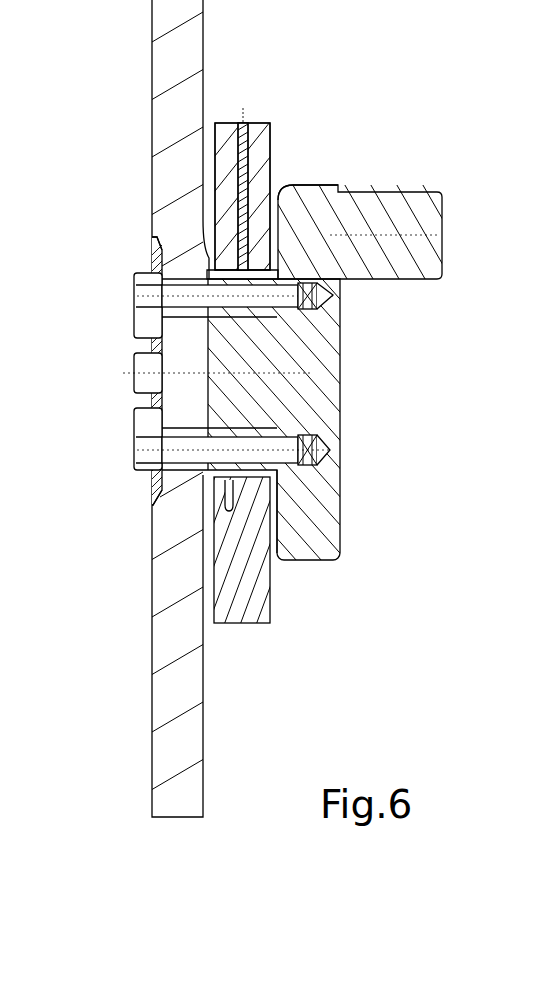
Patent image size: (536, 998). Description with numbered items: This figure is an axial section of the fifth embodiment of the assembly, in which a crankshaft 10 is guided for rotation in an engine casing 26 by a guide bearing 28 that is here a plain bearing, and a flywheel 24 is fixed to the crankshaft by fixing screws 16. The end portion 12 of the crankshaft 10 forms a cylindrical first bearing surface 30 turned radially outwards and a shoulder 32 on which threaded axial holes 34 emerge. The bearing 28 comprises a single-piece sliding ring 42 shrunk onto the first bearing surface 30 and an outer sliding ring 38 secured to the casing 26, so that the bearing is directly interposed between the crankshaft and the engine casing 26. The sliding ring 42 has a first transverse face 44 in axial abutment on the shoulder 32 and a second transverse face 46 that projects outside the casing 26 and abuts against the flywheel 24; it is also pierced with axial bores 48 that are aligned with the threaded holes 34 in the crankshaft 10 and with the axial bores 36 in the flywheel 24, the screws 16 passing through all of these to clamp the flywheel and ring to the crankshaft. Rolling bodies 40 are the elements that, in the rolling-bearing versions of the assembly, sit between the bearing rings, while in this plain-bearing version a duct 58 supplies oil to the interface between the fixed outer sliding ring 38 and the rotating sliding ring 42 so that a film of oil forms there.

The crankshaft 10 is at (278, 276).
The end portion 12 is at (215, 400).
The fixing screws 16 is at (132, 287).
The flywheel 24 is at (150, 2).
The engine casing 26 is at (271, 610).
The guide bearing 28 is at (283, 173).
The first bearing surface 30 is at (330, 342).
The shoulder 32 is at (340, 525).
The threaded axial holes 34 is at (333, 296).
The axial bores 36 is at (137, 303).
The outer sliding ring 38 is at (230, 482).
The rolling bodies 40 is at (150, 248).
The sliding ring 42 is at (262, 428).
The first transverse face 44 is at (273, 283).
The second transverse face 46 is at (238, 444).
The axial bores 48 is at (133, 452).
The duct 58 is at (272, 128).